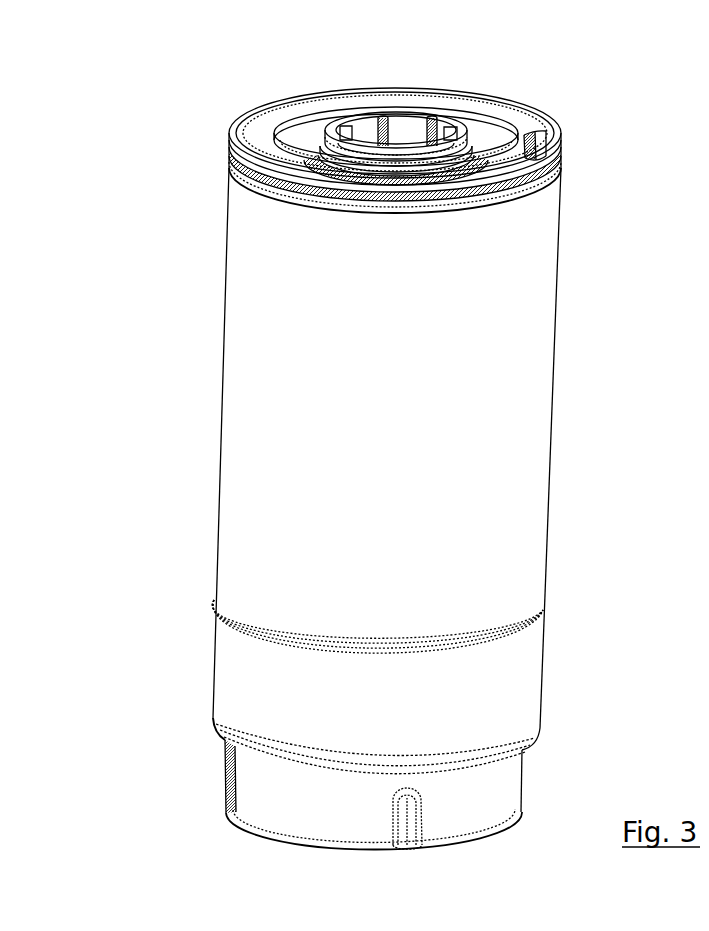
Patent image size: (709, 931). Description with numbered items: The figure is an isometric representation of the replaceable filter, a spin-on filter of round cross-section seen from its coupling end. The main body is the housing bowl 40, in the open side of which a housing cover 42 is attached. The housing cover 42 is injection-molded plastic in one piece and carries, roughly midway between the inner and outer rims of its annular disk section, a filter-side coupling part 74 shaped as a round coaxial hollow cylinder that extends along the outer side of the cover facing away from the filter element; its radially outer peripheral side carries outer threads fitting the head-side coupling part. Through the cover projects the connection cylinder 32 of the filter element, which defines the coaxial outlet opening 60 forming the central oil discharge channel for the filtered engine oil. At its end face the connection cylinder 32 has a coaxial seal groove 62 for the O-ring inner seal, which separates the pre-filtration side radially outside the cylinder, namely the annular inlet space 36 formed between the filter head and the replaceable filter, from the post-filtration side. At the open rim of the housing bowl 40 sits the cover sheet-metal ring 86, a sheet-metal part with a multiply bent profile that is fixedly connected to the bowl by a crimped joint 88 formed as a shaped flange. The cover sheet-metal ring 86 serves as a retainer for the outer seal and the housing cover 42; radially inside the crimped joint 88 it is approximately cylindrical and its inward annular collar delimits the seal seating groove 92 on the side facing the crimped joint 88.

The connection cylinder 32 is at (418, 121).
The annular inlet space 36 is at (490, 130).
The housing bowl 40 is at (230, 592).
The housing cover 42 is at (480, 113).
The outlet opening 60 is at (398, 123).
The seal groove 62 is at (336, 128).
The filter-side coupling part 74 is at (537, 142).
The cover sheet-metal ring 86 is at (558, 143).
The crimped joint 88 is at (228, 128).
The seal seating groove 92 is at (252, 128).